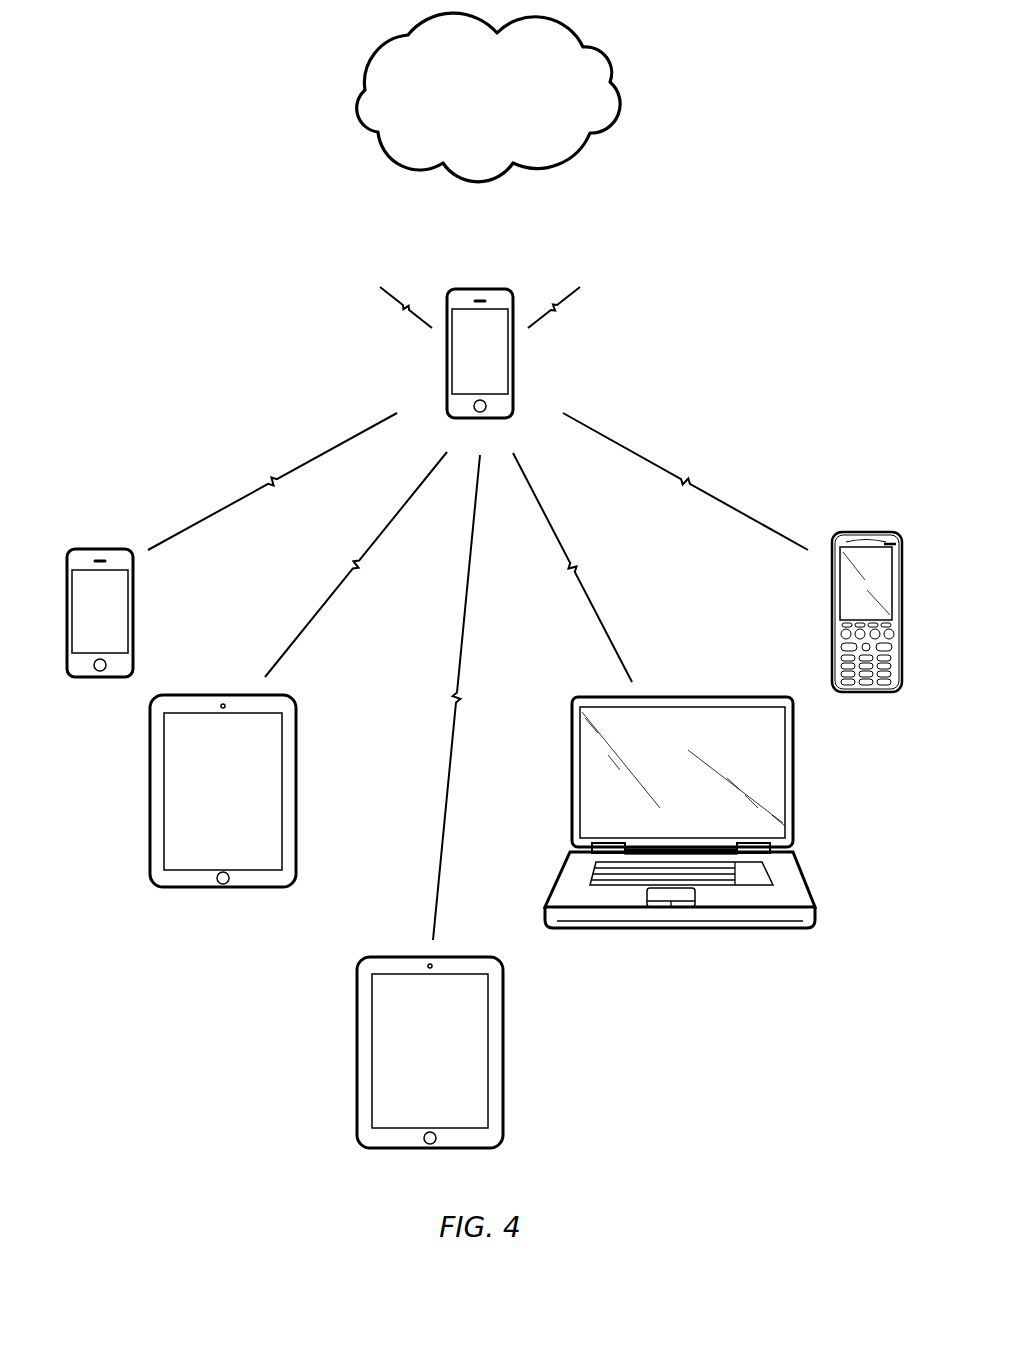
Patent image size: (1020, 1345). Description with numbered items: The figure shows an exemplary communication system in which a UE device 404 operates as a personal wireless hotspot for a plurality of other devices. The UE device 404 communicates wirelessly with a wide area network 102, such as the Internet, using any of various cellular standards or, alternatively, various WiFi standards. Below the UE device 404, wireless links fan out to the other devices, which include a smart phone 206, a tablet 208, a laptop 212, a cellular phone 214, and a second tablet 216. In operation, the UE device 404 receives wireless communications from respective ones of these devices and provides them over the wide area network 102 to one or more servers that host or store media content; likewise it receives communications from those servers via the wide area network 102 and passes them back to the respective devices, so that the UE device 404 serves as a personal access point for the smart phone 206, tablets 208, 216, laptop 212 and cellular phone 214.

The wide area network 102 is at (488, 97).
The UE device 404 is at (488, 289).
The smart phone 206 is at (93, 549).
The tablet 208 is at (212, 696).
The laptop 212 is at (712, 696).
The cellular phone 214 is at (866, 532).
The tablet 216 is at (418, 957).